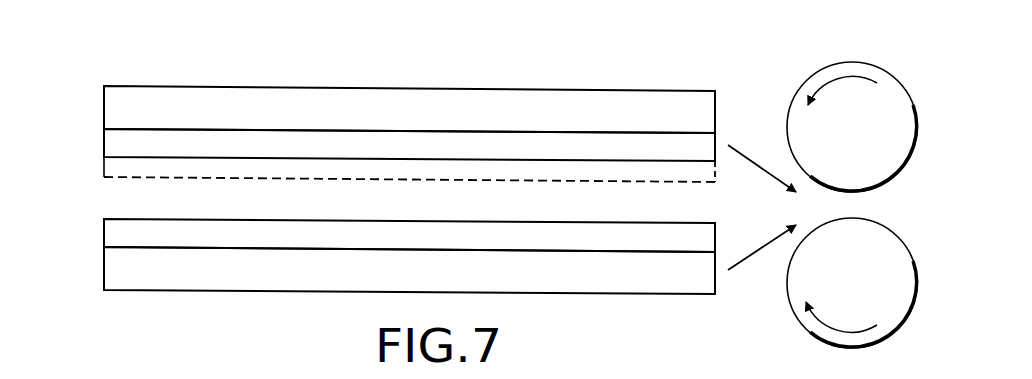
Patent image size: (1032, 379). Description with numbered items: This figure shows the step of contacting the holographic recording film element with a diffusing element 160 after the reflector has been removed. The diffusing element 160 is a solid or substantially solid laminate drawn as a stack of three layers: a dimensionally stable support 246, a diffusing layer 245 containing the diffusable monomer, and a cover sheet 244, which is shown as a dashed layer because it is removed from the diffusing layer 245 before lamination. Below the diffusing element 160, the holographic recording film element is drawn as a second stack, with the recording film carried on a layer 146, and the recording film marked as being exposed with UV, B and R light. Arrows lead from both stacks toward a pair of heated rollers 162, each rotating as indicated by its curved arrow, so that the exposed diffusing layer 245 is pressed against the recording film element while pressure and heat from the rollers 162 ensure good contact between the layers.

The diffusing element 160 is at (385, 105).
The dimensionally stable support 246 is at (104, 106).
The diffusing layer 245 is at (104, 143).
The cover sheet 244 is at (104, 167).
The substrate layer 146 is at (104, 270).
The heated rollers 162 is at (870, 145).